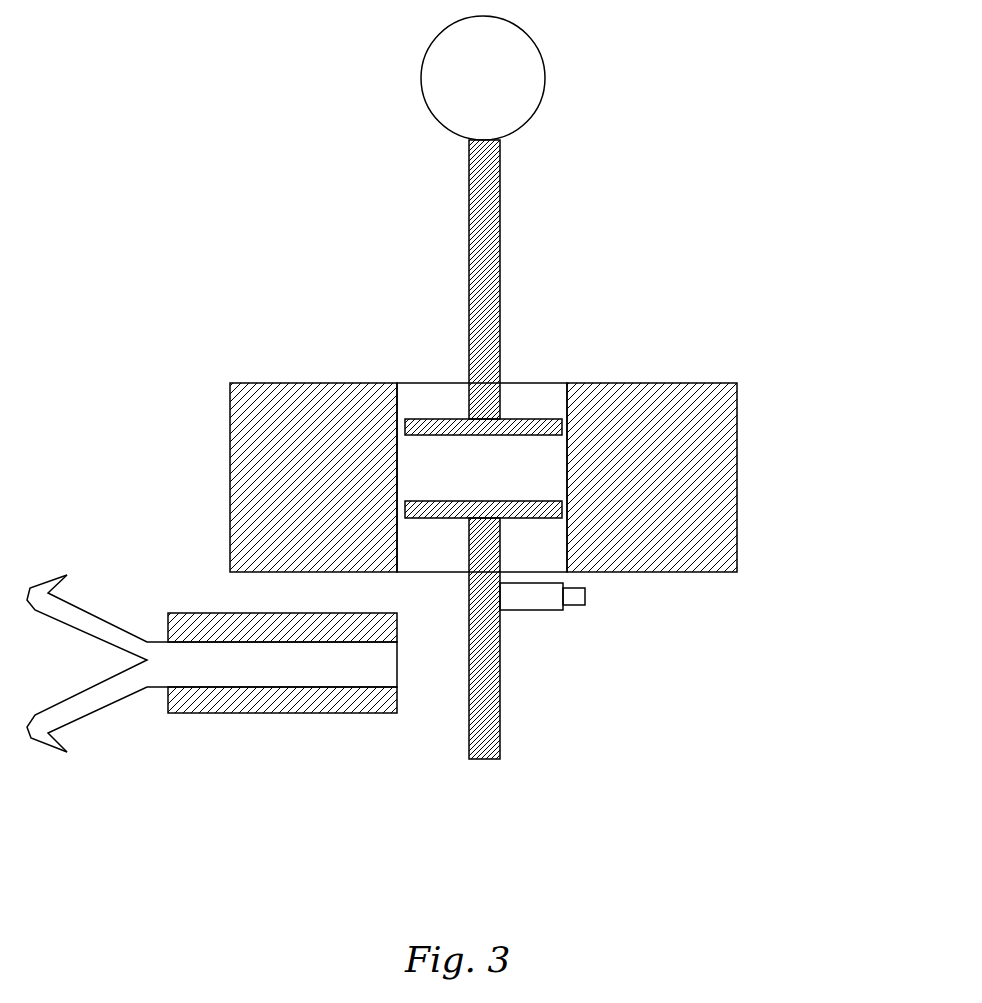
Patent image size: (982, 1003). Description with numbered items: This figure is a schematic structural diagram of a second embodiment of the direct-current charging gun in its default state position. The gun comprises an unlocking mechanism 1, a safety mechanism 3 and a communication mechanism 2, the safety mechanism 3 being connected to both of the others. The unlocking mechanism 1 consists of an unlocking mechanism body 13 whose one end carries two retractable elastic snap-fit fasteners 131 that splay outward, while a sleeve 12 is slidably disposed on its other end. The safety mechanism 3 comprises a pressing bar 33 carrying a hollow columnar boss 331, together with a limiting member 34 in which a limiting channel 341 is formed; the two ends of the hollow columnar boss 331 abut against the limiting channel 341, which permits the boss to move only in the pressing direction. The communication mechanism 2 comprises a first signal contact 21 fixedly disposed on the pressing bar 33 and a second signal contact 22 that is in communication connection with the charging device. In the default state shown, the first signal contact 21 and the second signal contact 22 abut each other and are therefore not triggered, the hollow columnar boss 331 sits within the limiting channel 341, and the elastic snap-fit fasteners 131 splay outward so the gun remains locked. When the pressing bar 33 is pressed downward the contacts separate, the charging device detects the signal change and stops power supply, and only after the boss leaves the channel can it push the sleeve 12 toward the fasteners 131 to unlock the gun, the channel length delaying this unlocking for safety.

The unlocking mechanism 1 is at (212, 757).
The sleeve 12 is at (292, 695).
The unlocking mechanism body 13 is at (215, 670).
The elastic snap-fit fasteners 131 is at (103, 690).
The communication mechanism 2 is at (554, 749).
The first signal contact 21 is at (542, 602).
The second signal contact 22 is at (575, 598).
The safety mechanism 3 is at (563, 434).
The pressing bar 33 is at (502, 307).
The hollow columnar boss 331 is at (540, 418).
The limiting member 34 is at (660, 437).
The limiting channel 341 is at (437, 553).